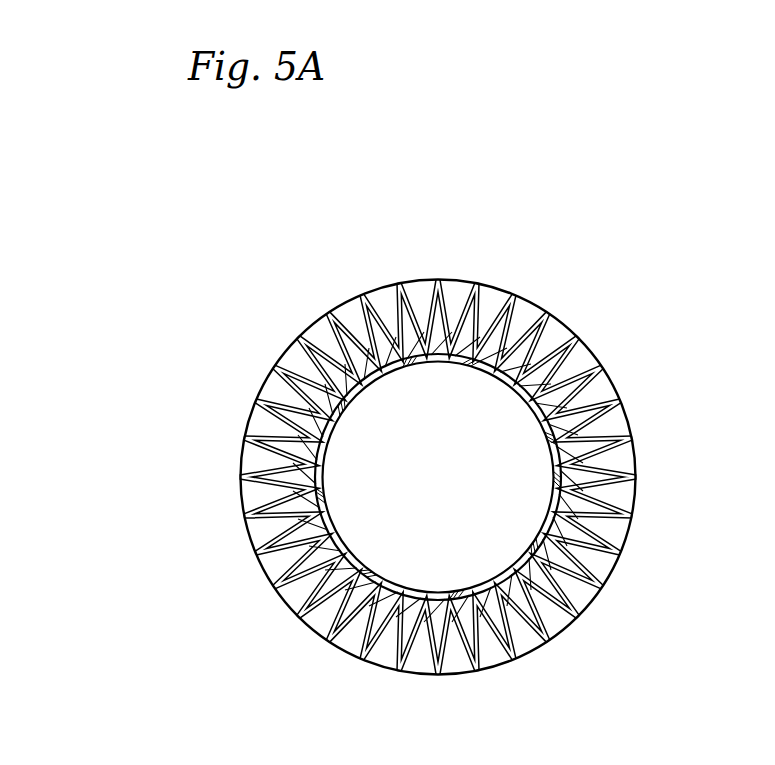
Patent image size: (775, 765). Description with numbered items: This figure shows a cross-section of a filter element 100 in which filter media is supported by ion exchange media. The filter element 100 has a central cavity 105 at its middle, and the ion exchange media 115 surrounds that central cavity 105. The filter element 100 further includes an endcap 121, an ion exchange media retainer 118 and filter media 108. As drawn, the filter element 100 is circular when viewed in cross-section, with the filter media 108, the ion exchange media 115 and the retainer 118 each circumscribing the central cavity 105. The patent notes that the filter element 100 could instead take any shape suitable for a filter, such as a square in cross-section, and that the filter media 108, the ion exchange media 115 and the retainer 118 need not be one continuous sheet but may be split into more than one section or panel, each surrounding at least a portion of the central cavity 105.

The filter element 100 is at (563, 228).
The central cavity 105 is at (477, 405).
The filter media 108 is at (257, 440).
The ion exchange media 115 is at (567, 408).
The ion exchange media retainer 118 is at (547, 540).
The endcap 121 is at (270, 383).